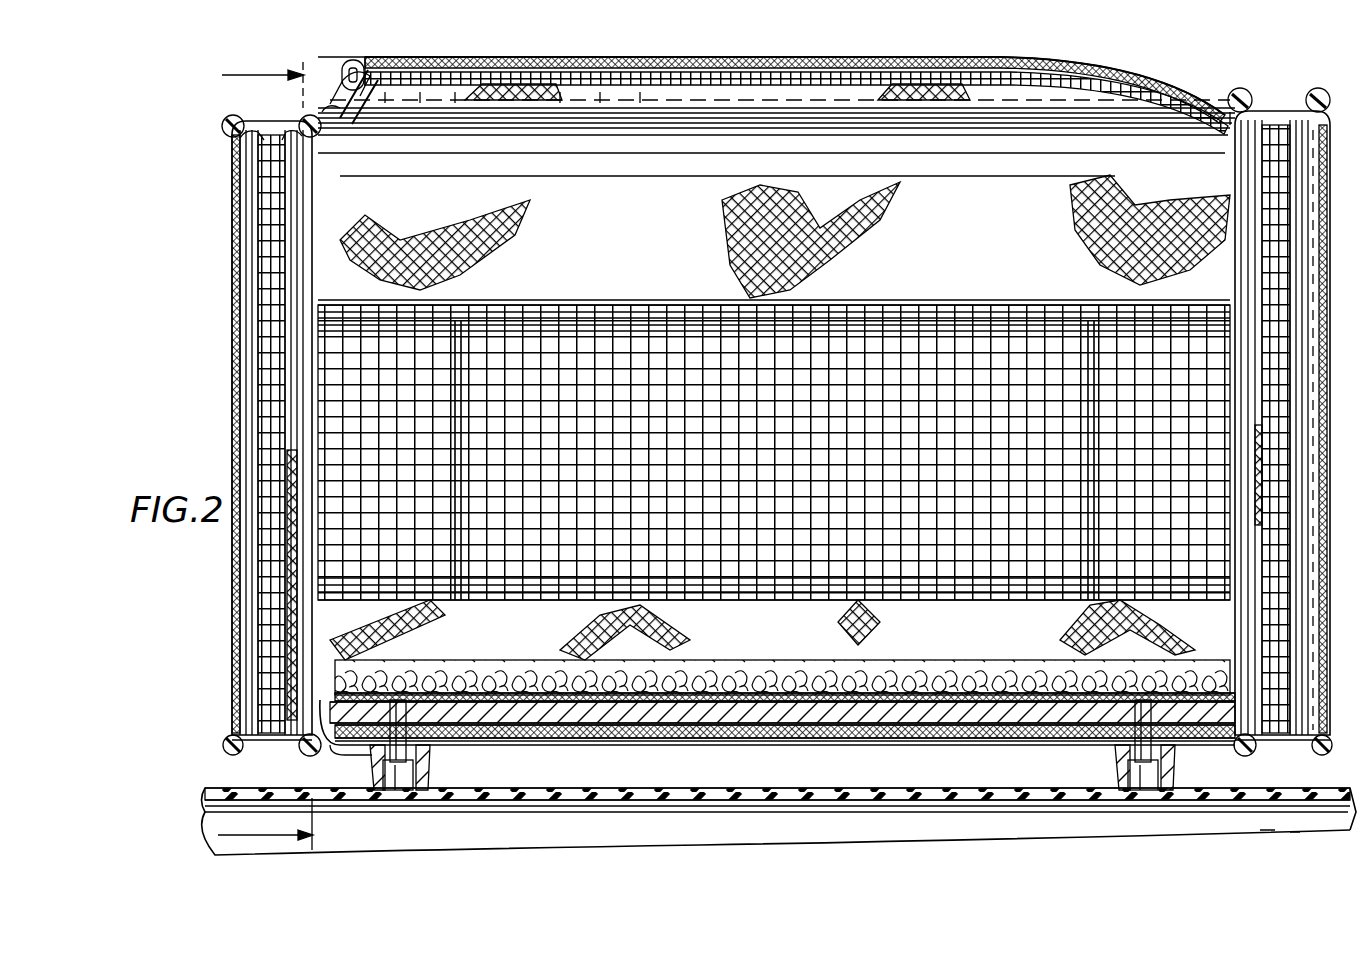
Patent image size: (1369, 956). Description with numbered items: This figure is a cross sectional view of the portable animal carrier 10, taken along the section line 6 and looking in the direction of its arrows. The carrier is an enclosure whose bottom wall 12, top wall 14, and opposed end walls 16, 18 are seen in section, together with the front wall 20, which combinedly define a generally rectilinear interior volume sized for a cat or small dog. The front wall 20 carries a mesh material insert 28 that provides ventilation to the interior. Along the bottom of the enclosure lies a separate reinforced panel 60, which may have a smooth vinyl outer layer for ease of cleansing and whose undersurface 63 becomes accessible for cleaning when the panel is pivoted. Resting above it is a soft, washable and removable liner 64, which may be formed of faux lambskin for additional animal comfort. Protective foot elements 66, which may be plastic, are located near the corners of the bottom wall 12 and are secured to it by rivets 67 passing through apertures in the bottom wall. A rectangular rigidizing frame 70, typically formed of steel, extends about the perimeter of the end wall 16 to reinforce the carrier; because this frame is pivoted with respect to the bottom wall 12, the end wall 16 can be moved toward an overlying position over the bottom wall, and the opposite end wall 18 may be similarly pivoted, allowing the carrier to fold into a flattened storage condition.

The section line 6- 6 is at (244, 456).
The portable animal carrier 10 is at (1232, 78).
The bottom wall 12 is at (778, 742).
The top wall 14 is at (1196, 97).
The end wall 16 is at (232, 402).
The end wall 18 is at (1328, 504).
The front wall 20 is at (882, 283).
The mesh material insert 28 is at (410, 385).
The reinforced panel 60 is at (728, 688).
The undersurface 63 is at (746, 744).
The liner 64 is at (908, 682).
The protective foot elements 66 is at (428, 758).
The rivets 67 is at (371, 757).
The rigidizing frame 70 is at (324, 90).